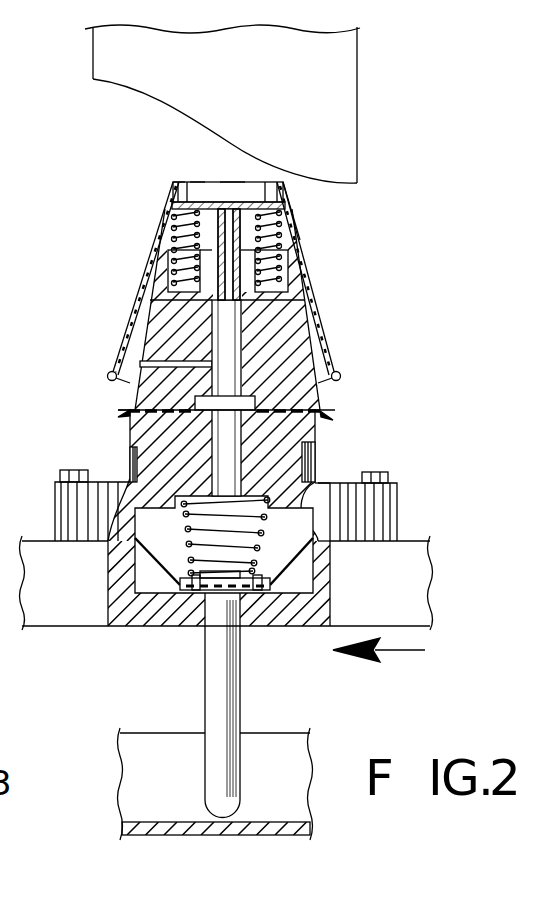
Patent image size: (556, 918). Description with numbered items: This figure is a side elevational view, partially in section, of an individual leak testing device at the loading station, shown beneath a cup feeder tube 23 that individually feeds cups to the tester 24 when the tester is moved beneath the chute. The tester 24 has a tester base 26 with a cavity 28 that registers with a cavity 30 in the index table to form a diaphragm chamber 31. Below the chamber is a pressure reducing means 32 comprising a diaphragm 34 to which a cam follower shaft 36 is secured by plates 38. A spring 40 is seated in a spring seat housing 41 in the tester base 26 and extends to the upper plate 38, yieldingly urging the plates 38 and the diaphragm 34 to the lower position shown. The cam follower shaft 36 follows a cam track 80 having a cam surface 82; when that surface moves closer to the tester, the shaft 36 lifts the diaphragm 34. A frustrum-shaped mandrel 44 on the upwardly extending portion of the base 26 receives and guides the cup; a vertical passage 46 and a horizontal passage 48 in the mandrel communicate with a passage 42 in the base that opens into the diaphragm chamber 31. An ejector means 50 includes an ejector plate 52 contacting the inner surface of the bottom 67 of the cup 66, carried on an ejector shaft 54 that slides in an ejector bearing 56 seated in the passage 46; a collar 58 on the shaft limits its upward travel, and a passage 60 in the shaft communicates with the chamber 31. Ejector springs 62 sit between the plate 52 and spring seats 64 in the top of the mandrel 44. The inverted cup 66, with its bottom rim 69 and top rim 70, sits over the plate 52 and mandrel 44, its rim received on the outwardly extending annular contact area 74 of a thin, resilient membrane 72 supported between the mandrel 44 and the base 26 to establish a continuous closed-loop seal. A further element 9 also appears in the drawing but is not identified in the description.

The cup feeder tube 23 is at (357, 135).
The individual tester 24 is at (386, 405).
The tester base 26 is at (403, 500).
The cavity 28 is at (313, 541).
The cavity 30 is at (317, 543).
The diaphragm chamber 31 is at (171, 537).
The pressure reducing means 32 is at (184, 652).
The diaphragm 34 is at (157, 548).
The cam follower shaft 36 is at (205, 703).
The plates 38 is at (262, 578).
The spring 40 is at (313, 541).
The spring seat housing 41 is at (305, 520).
The passage 42 is at (228, 458).
The mandrel 44 is at (300, 298).
The vertical passage 46 is at (237, 343).
The horizontal passage 48 is at (163, 361).
The ejector means 50 is at (156, 226).
The ejector plate 52 is at (170, 202).
The ejector shaft 54 is at (268, 238).
The ejector bearing 56 is at (200, 264).
The collar 58 is at (206, 300).
The passage 60 is at (230, 213).
The ejector springs 62 is at (262, 224).
The spring seats 64 is at (200, 274).
The cup 66 is at (229, 165).
The bottom 67 is at (195, 182).
The bottom rim 69 is at (176, 182).
The top rim 70 is at (107, 380).
The membrane 72 is at (98, 425).
The annular contact area 74 is at (128, 410).
The cam track 80 is at (310, 755).
The cam surface 82 is at (122, 822).
The base plate 9 is at (433, 590).